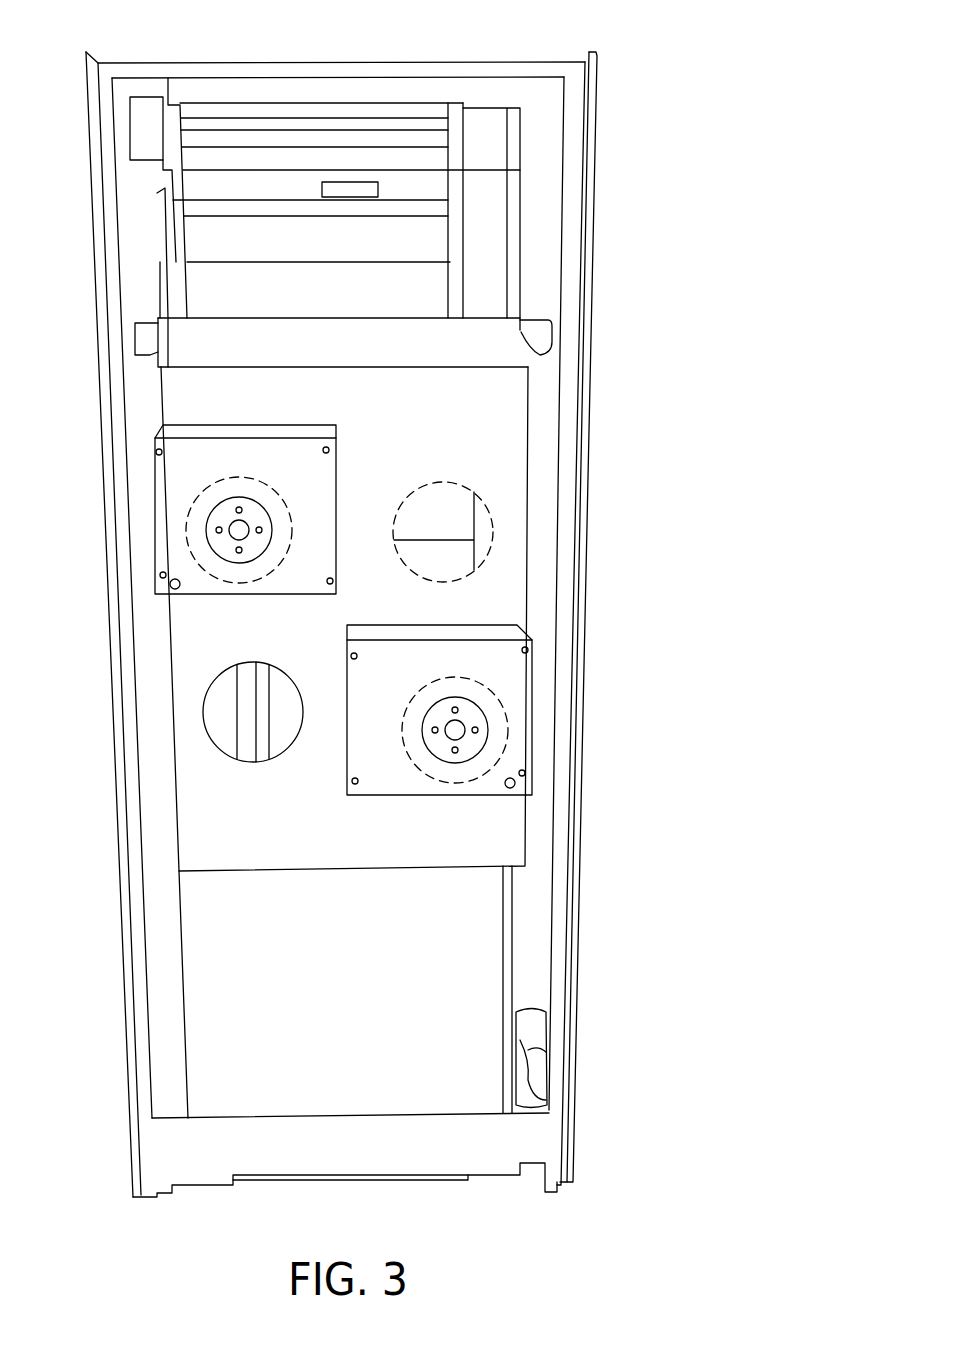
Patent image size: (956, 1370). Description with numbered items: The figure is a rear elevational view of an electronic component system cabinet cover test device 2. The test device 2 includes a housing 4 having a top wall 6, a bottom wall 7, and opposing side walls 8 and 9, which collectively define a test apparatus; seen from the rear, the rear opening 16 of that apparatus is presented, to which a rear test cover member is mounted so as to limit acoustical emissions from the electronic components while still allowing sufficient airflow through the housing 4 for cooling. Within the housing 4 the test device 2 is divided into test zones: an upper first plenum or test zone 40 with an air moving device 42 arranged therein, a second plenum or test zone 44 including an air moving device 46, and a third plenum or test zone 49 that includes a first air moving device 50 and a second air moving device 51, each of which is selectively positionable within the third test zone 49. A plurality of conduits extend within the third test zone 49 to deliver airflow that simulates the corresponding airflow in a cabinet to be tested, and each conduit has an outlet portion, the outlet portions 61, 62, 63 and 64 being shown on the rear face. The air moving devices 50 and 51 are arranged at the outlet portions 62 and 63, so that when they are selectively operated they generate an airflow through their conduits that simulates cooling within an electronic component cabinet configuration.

The electronic component system cabinet cover test device 2 is at (617, 1068).
The housing 4 is at (577, 975).
The top wall 6 is at (278, 62).
The bottom wall 7 is at (208, 1186).
The side wall 8 is at (583, 628).
The side wall 9 is at (100, 630).
The rear opening 16 is at (542, 112).
The first plenum or test zone 40 is at (140, 173).
The air moving device 42 is at (485, 115).
The second plenum or test zone 44 is at (527, 887).
The air moving device 46 is at (175, 851).
The third plenum or test zone 49 is at (538, 432).
The first air moving device 50 is at (513, 675).
The second air moving device 51 is at (327, 563).
The outlet portion 61 is at (478, 545).
The outlet portion 62 is at (278, 497).
The outlet portion 63 is at (425, 688).
The outlet portion 64 is at (212, 688).